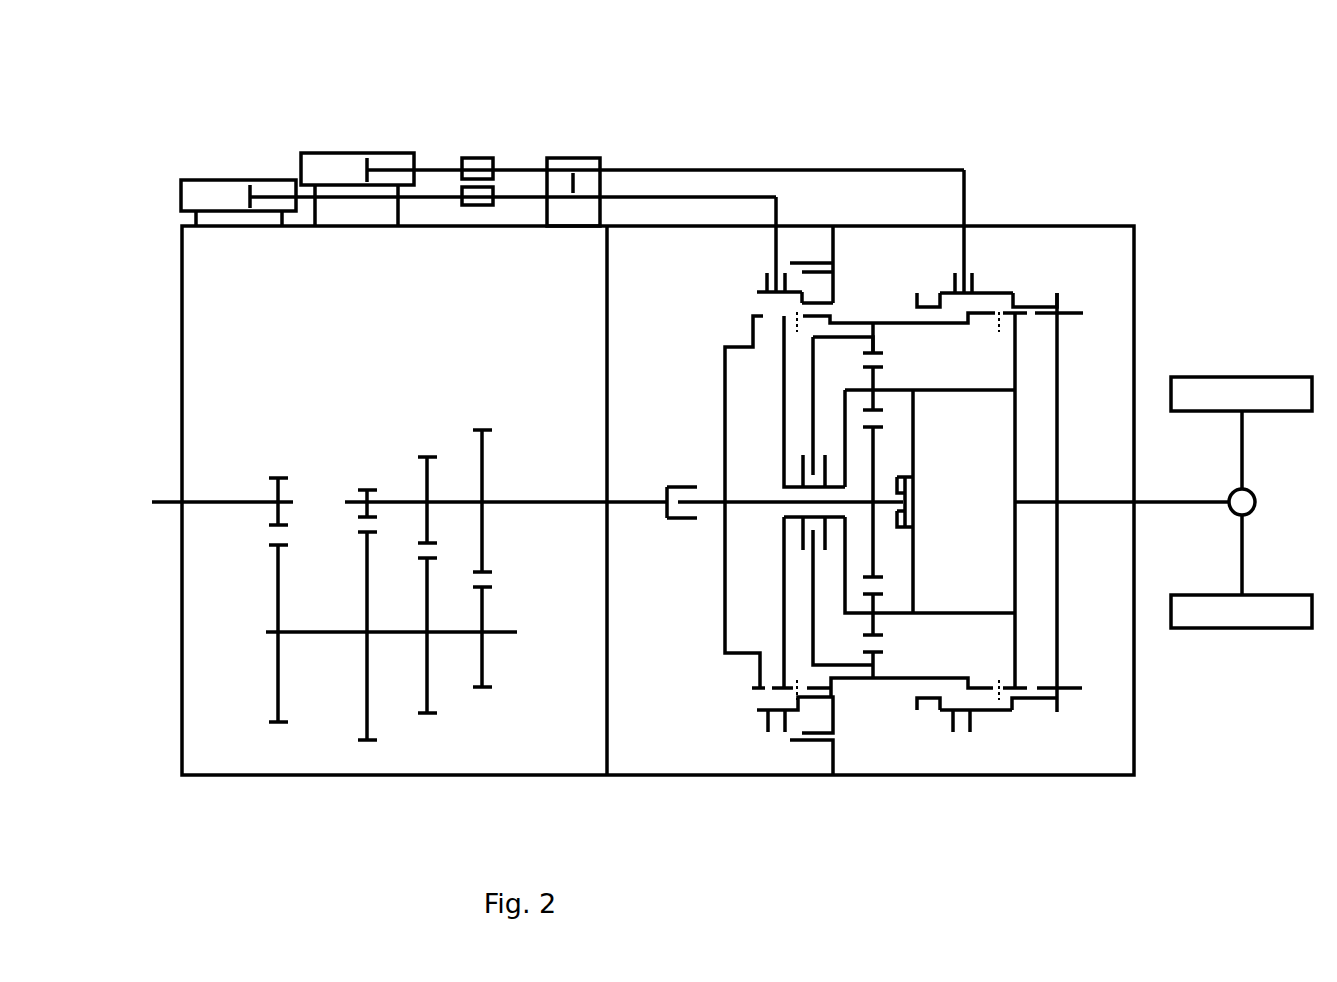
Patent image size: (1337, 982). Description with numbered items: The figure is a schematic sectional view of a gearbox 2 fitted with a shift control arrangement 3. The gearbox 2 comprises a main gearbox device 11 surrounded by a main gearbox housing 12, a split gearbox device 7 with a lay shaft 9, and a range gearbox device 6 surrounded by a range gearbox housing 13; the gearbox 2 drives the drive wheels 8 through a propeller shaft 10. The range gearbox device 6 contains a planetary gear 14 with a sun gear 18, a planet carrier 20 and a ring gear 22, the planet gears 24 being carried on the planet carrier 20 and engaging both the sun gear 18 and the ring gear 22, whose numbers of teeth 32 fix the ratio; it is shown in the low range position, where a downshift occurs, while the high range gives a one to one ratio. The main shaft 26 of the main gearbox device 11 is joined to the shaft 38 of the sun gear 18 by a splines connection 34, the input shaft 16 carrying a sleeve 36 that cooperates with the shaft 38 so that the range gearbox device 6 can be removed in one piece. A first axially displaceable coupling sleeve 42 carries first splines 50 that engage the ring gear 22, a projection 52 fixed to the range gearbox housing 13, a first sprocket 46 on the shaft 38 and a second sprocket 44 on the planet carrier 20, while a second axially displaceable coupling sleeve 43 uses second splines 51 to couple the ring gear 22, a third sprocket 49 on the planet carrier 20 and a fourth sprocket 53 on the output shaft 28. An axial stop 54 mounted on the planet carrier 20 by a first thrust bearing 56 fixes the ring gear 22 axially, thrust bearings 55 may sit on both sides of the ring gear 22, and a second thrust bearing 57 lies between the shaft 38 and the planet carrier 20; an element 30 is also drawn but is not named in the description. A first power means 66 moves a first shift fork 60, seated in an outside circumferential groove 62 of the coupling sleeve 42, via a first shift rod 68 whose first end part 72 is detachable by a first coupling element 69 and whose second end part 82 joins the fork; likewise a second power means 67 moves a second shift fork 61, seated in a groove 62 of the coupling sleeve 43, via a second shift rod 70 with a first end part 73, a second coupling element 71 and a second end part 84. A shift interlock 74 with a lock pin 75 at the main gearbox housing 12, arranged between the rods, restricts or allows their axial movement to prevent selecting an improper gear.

The gearbox 2 is at (684, 815).
The shift control arrangement 3 is at (566, 160).
The range gearbox device 6 is at (913, 520).
The split gearbox device 7 is at (274, 458).
The drive wheels 8 is at (1222, 377).
The lay shaft 9 is at (333, 634).
The propeller shaft 10 is at (1150, 502).
The main gearbox device 11 is at (391, 545).
The main gearbox housing 12 is at (1013, 225).
The range gearbox housing 13 is at (1018, 778).
The planetary gear 14 is at (981, 500).
The input shaft 16 is at (637, 506).
The sun gear 18 is at (877, 517).
The planet carrier 20 is at (1017, 392).
The ring gear 22 is at (887, 328).
The planet gears 24 is at (877, 380).
The main shaft 26 is at (591, 506).
The output shaft 28 is at (1108, 506).
The intermediate shaft 30 is at (848, 502).
The teeth 32 is at (900, 590).
The splines connection 34 is at (676, 494).
The sleeve 36 is at (637, 506).
The shaft of the sun gear 38 is at (670, 520).
The first axially displaceable coupling sleeve 42 is at (834, 272).
The second axially displaceable coupling sleeve 43 is at (1059, 303).
The second sprocket 44 is at (784, 384).
The first sprocket 46 is at (718, 507).
The third sprocket 49 is at (1018, 342).
The first splines 50 is at (813, 688).
The second splines 51 is at (1030, 698).
The projection 52 is at (805, 262).
The fourth sprocket 53 is at (1058, 390).
The axial stop 54 is at (817, 372).
The thrust bearings 55 is at (800, 330).
The first thrust bearing 56 is at (804, 551).
The second thrust bearing 57 is at (913, 473).
The first shift fork 60 is at (773, 258).
The second shift fork 61 is at (957, 270).
The outside circumferential groove 62 is at (779, 723).
The first power means 66 is at (183, 190).
The second power means 67 is at (301, 158).
The first shift rod 68 is at (613, 196).
The first coupling element 69 is at (477, 205).
The second shift rod 70 is at (856, 169).
The second coupling element 71 is at (471, 158).
The first end part of the first shift rod 72 is at (505, 198).
The first end part of the second shift rod 73 is at (503, 168).
The shift interlock 74 is at (570, 157).
The lock pin 75 is at (574, 188).
The second end part of the first shift rod 82 is at (735, 196).
The second end part of the second shift rod 84 is at (964, 169).